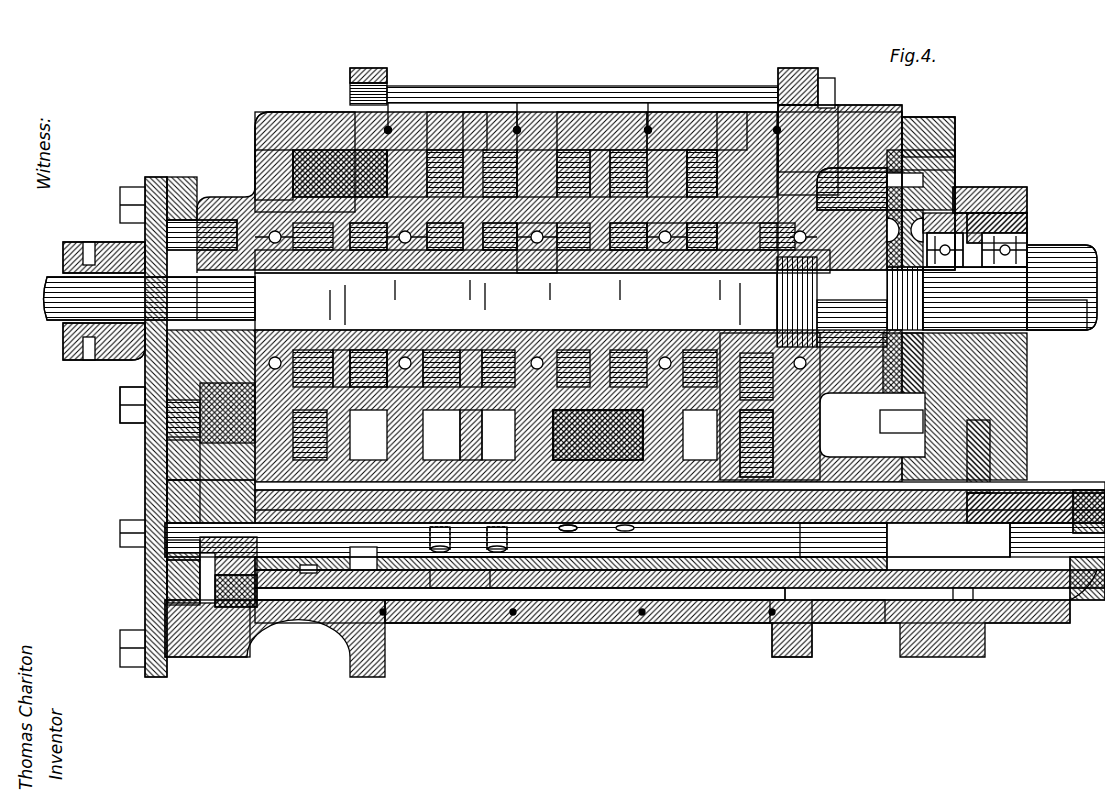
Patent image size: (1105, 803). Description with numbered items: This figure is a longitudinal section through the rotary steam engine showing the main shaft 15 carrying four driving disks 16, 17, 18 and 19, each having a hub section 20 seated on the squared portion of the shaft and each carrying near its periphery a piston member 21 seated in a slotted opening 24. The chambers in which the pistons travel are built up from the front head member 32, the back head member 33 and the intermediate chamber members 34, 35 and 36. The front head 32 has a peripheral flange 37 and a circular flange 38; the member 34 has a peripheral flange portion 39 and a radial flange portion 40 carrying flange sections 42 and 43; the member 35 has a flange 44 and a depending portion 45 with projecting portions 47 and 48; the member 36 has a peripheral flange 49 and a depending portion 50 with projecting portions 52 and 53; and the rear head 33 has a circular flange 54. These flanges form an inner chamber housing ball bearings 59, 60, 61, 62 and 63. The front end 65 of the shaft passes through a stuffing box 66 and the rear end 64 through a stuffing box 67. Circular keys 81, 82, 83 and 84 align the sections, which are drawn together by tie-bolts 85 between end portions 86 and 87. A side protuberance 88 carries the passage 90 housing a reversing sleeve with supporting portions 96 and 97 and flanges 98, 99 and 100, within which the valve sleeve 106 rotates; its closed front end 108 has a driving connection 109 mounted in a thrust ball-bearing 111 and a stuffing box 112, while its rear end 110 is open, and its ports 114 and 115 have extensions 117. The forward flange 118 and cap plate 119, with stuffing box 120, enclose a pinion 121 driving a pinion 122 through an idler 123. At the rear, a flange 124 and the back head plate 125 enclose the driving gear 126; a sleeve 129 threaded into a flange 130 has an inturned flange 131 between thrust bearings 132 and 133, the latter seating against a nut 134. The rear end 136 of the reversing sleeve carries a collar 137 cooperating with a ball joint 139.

The projecting end portion of the front head 86 is at (370, 68).
The circular key 81 is at (388, 128).
The inwardly projecting radial flange portion 40 is at (408, 165).
The first intermediate chamber member 34 is at (447, 125).
The peripheral flange portion 39 is at (480, 130).
The circular key 82 is at (517, 128).
The downwardly depending portion 45 is at (535, 168).
The chamber member 35 is at (578, 128).
The flange 44 is at (600, 140).
The circular key 83 is at (648, 128).
The main shaft 15 is at (668, 165).
The chamber member 36 is at (690, 130).
The downwardly depending portion 50 is at (700, 170).
The rearwardly projecting peripheral flange 49 is at (740, 135).
The tie-bolt 85 is at (790, 128).
The projecting end portion of the back head 87 is at (800, 70).
The circular key 84 is at (782, 130).
The rearwardly projecting flange 124 is at (877, 165).
The back head member 33 is at (800, 158).
The stuffing box 67 is at (832, 213).
The back head plate 125 is at (940, 135).
The driving gear 126 is at (910, 197).
The flange 130 is at (985, 200).
The sleeve 129 is at (1030, 222).
The rear end of the driving shaft 64 is at (1073, 262).
The front head member 32 is at (262, 118).
The peripheral flange 37 is at (305, 128).
The slotted opening 24 is at (335, 112).
The forwardly projecting flange 118 is at (185, 195).
The piston member 21 is at (290, 160).
The circular flange 38 is at (320, 205).
The stuffing box 66 is at (222, 233).
The front end of the driving shaft 65 is at (105, 285).
The ball bearing 59 is at (275, 250).
The forwardly extending flange section 42 is at (370, 250).
The hub section 20 is at (385, 350).
The rearwardly extending flange section 43 is at (440, 258).
The forwardly projecting portion 47 is at (470, 345).
The ball bearing 61 is at (520, 250).
The rearwardly projecting portion 48 is at (555, 258).
The forwardly projecting portion 52 is at (640, 258).
The ball bearing 62 is at (668, 250).
The rearwardly projecting portion 53 is at (705, 250).
The forwardly projecting circular flange 54 is at (760, 250).
The front thrust ball-bearing 132 is at (943, 265).
The inturned flange 131 is at (965, 275).
The rear thrust ball-bearing 133 is at (1005, 265).
The disk 16 is at (338, 350).
The ball bearing 60 is at (410, 350).
The disk 17 is at (470, 460).
The disk 18 is at (598, 440).
The disk 19 is at (755, 415).
The nut 134 is at (1047, 350).
The ball bearing 63 is at (812, 412).
The collar 137 is at (1028, 493).
The ball joint 139 is at (1085, 493).
The stuffing box 120 is at (63, 340).
The pinion 121 is at (140, 357).
The cap plate 119 is at (143, 410).
The idler 123 is at (167, 452).
The pinion 122 is at (167, 490).
The front end of the valve sleeve 108 is at (290, 540).
The driving connection 109 is at (200, 548).
The stuffing box 112 is at (200, 568).
The extension 117 is at (440, 530).
The thrust ball-bearing 111 is at (232, 630).
The front supporting portion 96 is at (290, 637).
The intermediate flange 98 is at (420, 630).
The port 114 is at (445, 600).
The intermediate flange 99 is at (548, 620).
The port 115 is at (575, 600).
The intermediate flange 100 is at (658, 620).
The passage 90 is at (705, 590).
The side protuberance 88 is at (720, 615).
The valve sleeve 106 is at (793, 657).
The rear end of the valve sleeve 110 is at (838, 545).
The rear supporting portion 97 is at (863, 620).
The extreme rear end of the reversing sleeve 136 is at (1088, 590).